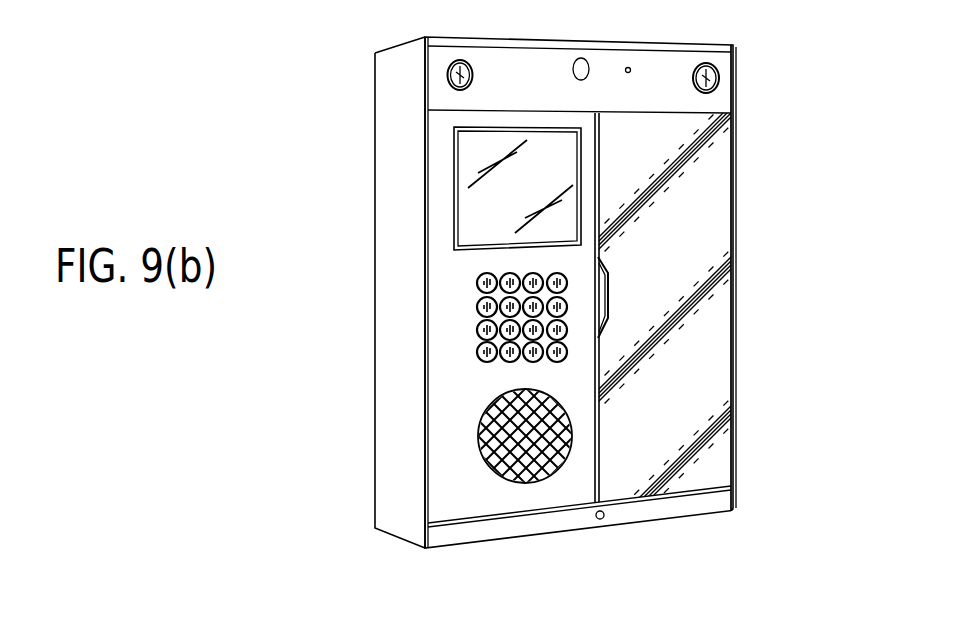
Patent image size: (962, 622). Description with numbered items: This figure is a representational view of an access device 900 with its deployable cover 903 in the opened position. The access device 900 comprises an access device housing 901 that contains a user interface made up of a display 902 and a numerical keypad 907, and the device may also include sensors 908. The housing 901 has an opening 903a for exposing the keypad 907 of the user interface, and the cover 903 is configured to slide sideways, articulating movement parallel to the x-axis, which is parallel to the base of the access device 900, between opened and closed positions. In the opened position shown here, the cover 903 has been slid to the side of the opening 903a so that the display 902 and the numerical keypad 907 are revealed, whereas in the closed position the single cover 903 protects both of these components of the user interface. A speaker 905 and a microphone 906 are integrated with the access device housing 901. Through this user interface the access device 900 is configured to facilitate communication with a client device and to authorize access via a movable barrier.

The access device 900 is at (288, 434).
The access device housing 901 is at (375, 125).
The display 902 is at (467, 217).
The deployable cover 903 is at (608, 300).
The opening 903a is at (450, 377).
The speaker 905 is at (478, 460).
The microphone 906 is at (603, 522).
The numerical keypad 907 is at (480, 309).
The sensors 908 is at (637, 67).